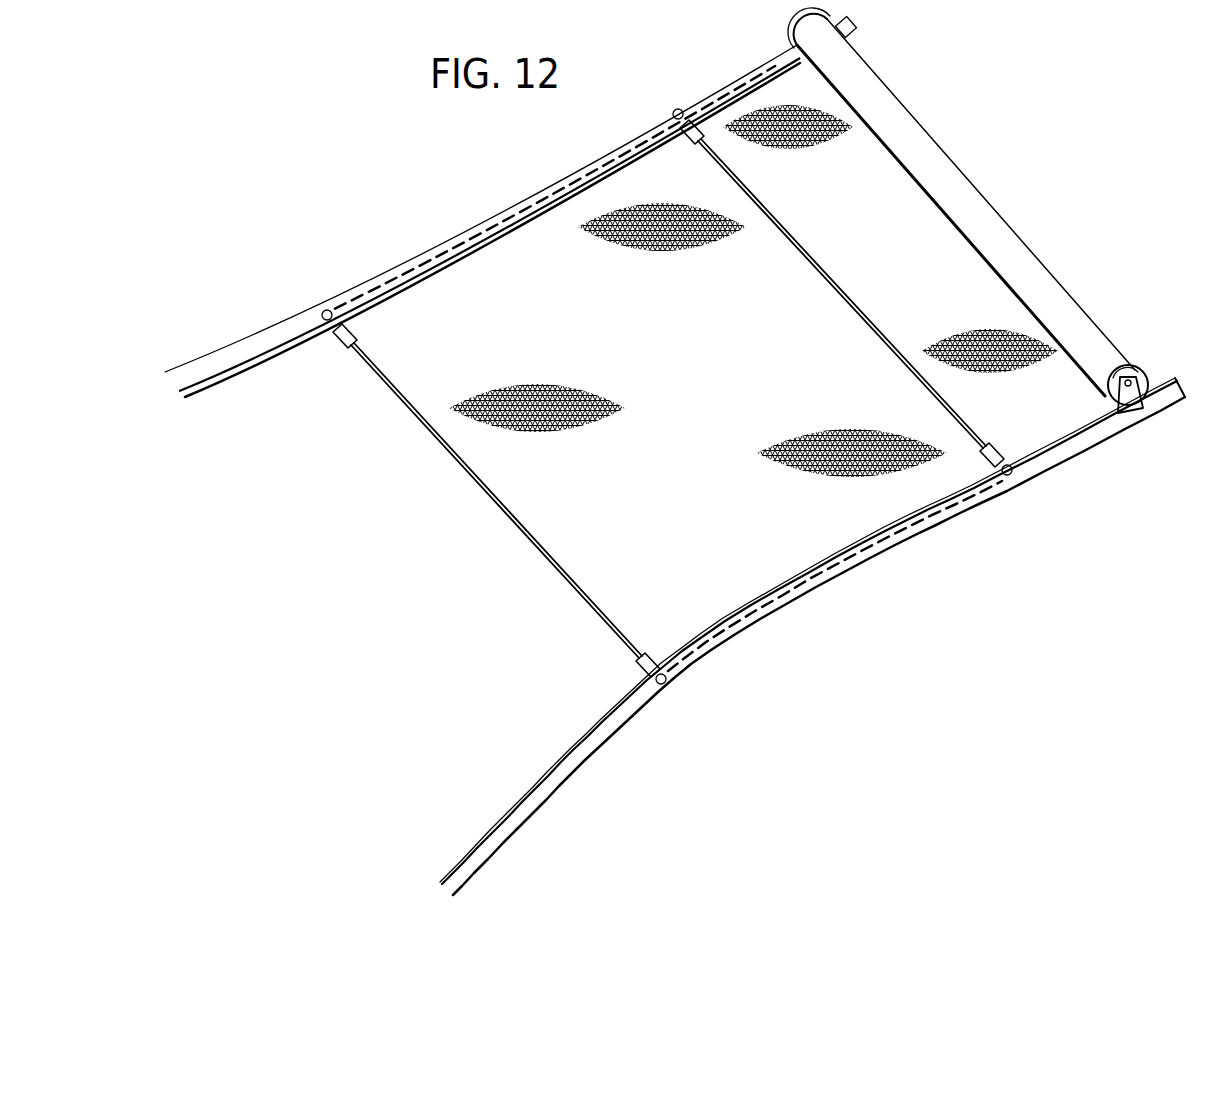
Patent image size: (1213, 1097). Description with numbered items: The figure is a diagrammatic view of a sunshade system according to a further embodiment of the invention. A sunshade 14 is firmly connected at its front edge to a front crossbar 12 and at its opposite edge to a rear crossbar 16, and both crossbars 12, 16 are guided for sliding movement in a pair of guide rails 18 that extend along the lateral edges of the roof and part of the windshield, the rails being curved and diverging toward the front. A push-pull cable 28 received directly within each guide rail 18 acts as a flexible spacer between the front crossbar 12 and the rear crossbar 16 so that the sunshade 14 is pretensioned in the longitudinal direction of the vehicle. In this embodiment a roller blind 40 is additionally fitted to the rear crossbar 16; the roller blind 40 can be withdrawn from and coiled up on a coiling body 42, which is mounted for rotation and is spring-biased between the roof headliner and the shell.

The front crossbar 12 is at (470, 474).
The sunshade 14 is at (712, 413).
The rear crossbar 16 is at (857, 316).
The guide rail 18 is at (266, 337).
The push-pull cable 28 is at (473, 230).
The roller blind 40 is at (945, 240).
The coiling body 42 is at (1069, 300).